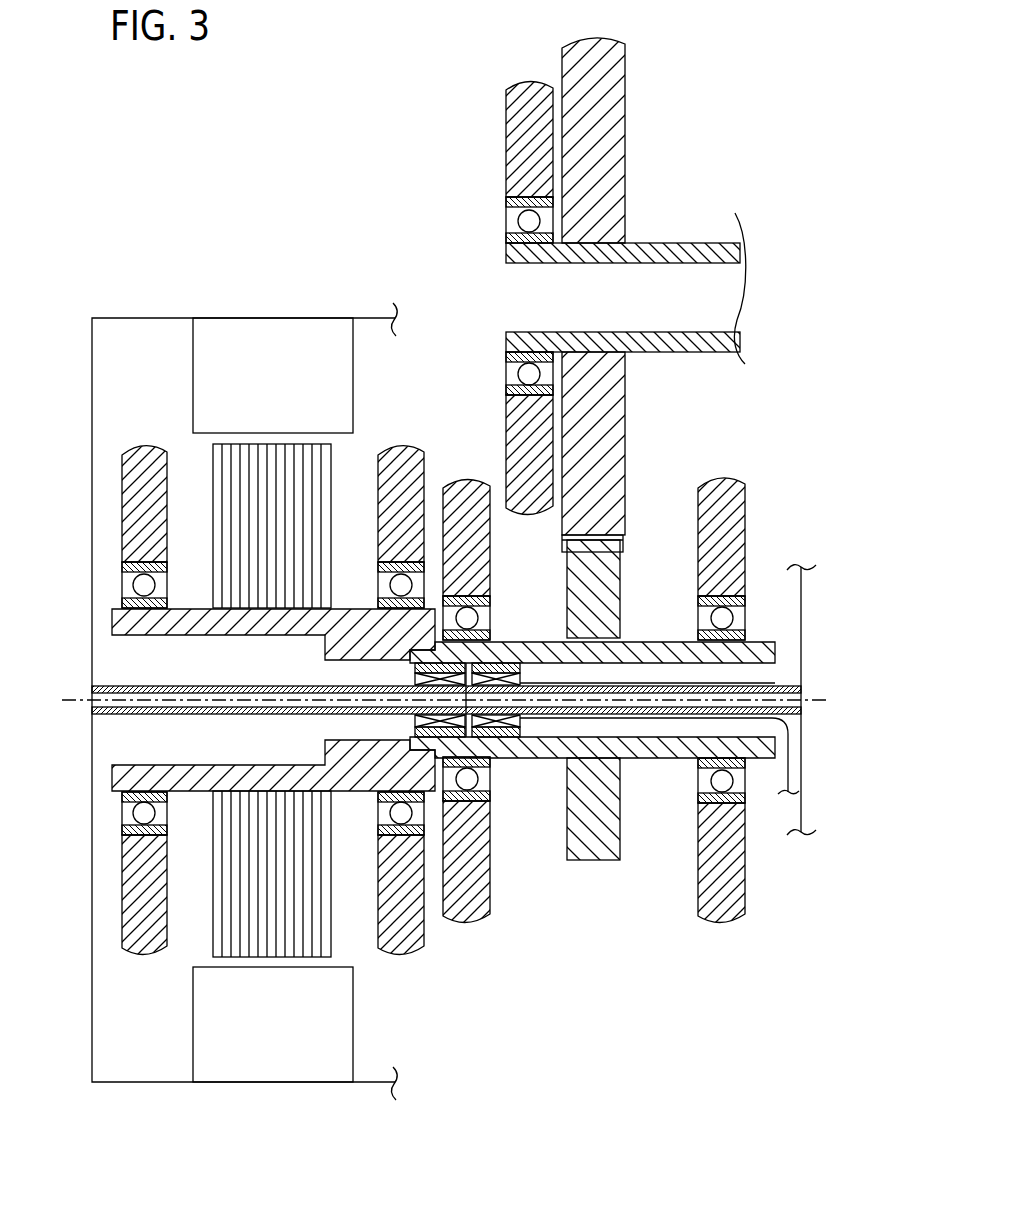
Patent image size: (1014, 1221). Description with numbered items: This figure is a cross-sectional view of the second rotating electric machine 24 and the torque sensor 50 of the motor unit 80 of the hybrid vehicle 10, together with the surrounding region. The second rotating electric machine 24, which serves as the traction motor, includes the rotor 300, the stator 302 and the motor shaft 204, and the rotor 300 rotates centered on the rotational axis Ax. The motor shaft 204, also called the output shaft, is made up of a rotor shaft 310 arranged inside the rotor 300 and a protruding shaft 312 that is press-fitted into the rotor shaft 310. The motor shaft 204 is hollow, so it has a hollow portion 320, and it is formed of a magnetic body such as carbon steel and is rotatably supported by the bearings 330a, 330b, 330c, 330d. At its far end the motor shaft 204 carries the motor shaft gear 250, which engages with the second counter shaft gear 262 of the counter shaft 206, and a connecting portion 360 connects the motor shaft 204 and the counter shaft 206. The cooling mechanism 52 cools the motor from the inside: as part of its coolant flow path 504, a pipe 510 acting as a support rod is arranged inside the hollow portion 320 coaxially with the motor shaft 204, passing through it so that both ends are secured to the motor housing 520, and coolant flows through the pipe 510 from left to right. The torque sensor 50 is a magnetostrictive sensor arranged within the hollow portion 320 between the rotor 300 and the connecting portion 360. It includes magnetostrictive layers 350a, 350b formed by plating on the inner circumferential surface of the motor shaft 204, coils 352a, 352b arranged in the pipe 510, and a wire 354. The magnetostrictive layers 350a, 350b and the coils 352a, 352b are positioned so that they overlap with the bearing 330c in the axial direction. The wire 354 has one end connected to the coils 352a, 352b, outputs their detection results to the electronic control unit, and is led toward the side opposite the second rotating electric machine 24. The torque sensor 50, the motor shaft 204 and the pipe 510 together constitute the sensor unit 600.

The vehicle 10 is at (287, 115).
The motor unit 80 is at (204, 214).
The second rotating electric machine 24 is at (178, 352).
The stator 302 is at (354, 366).
The rotor 300 is at (282, 444).
The motor housing 520 is at (93, 402).
The bearing 330a is at (128, 576).
The bearing 330b is at (394, 598).
The bearing 330c is at (454, 598).
The bearing 330d is at (698, 607).
The second counter shaft gear 262 is at (627, 462).
The counter shaft 206 is at (655, 353).
The connecting portion 360 is at (613, 543).
The motor shaft gear 250 is at (613, 622).
The hollow portion 320 is at (405, 827).
The rotor shaft 310 is at (393, 775).
The protruding shaft 312 is at (468, 745).
The motor shaft 204 is at (443, 827).
The coolant flow path 504 is at (446, 677).
The pipe 510 is at (140, 686).
The cooling mechanism 52 is at (207, 724).
The magnetostrictive layer 350a is at (413, 668).
The magnetostrictive layer 350b is at (522, 671).
The coil 352a is at (413, 714).
The coil 352b is at (522, 730).
The torque sensor 50 is at (498, 660).
The wire 354 is at (663, 720).
The sensor unit 600 is at (501, 779).
The rotational axis Ax is at (431, 701).